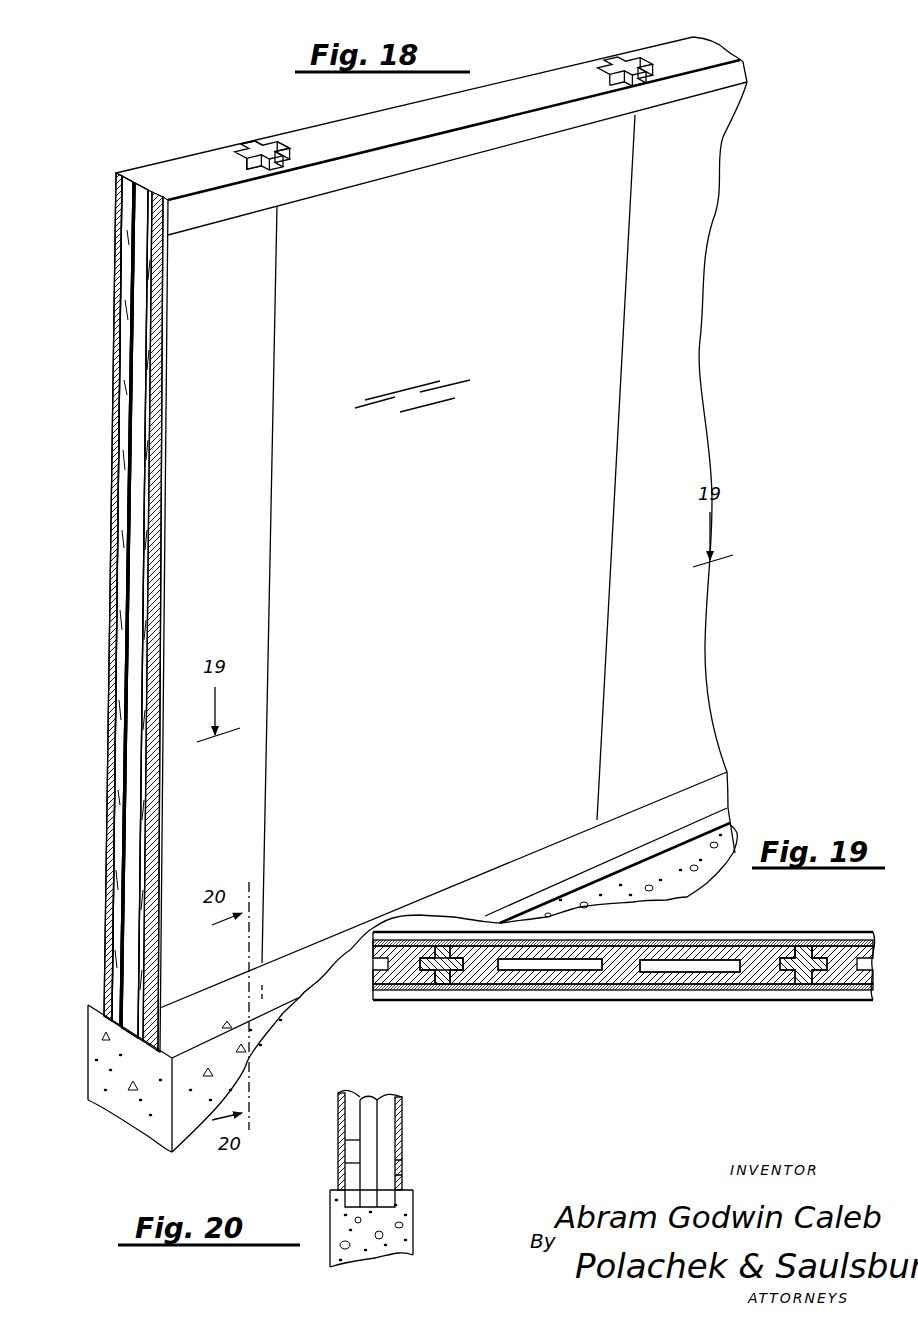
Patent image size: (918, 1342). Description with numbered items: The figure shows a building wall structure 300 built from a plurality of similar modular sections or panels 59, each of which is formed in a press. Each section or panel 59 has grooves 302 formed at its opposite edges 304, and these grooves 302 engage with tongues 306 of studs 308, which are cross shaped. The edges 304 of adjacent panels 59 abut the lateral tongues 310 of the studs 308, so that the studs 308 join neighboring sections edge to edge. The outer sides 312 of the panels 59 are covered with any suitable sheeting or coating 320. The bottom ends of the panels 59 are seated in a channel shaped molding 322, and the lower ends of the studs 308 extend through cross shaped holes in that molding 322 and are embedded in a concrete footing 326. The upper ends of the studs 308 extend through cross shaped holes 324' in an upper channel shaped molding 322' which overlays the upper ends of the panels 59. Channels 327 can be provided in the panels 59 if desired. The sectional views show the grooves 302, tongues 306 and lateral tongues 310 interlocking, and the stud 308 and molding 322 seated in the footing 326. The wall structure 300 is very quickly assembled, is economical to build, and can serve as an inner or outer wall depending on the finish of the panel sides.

In FIG. 18, the building wall structure 300 is at (703, 345).
In FIG. 19, the grooves 302 is at (506, 985).
In FIG. 19, the edges 304 is at (460, 985).
In FIG. 18, the tongues 306 is at (285, 138).
In FIG. 19, the tongues 306 is at (434, 985).
In FIG. 20, the tongues 306 is at (365, 1163).
In FIG. 18, the studs 308 is at (256, 134).
In FIG. 19, the studs 308 is at (802, 952).
In FIG. 20, the studs 308 is at (360, 1140).
In FIG. 18, the lateral tongues 310 is at (250, 140).
In FIG. 19, the lateral tongues 310 is at (441, 976).
In FIG. 20, the lateral tongues 310 is at (385, 1130).
In FIG. 18, the outer sides 312 is at (118, 794).
In FIG. 19, the outer sides 312 is at (670, 990).
In FIG. 18, the sheeting or coating 320 is at (150, 572).
In FIG. 19, the sheeting or coating 320 is at (650, 985).
In FIG. 20, the sheeting or coating 320 is at (400, 1103).
In FIG. 18, the channel shaped molding 322 is at (642, 830).
In FIG. 20, the channel shaped molding 322 is at (434, 1181).
In FIG. 18, the upper channel shaped molding 322' is at (431, 121).
In FIG. 18, the cross shaped holes 324' is at (184, 151).
In FIG. 18, the concrete footing 326 is at (160, 1113).
In FIG. 19, the concrete footing 326 is at (853, 998).
In FIG. 20, the concrete footing 326 is at (413, 1242).
In FIG. 18, the channels 327 is at (134, 933).
In FIG. 19, the channels 327 is at (585, 968).
In FIG. 18, the modular sections or panels 59 is at (117, 902).
In FIG. 19, the modular sections or panels 59 is at (838, 977).